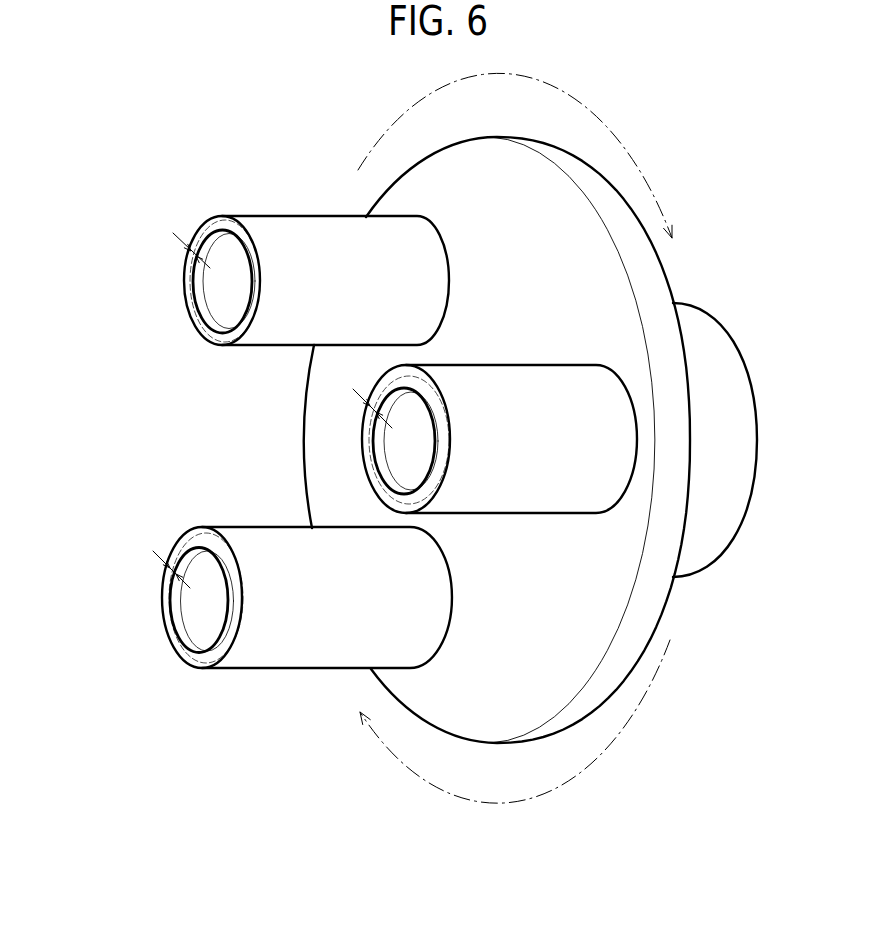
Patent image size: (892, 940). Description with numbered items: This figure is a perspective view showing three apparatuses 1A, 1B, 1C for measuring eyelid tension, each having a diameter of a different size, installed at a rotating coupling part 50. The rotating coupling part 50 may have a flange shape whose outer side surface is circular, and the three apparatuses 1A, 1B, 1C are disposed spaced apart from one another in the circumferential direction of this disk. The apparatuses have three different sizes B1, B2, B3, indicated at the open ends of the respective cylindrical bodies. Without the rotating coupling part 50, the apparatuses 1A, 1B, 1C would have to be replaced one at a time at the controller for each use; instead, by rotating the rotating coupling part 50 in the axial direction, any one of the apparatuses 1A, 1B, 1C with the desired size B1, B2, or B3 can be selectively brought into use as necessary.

The rotating coupling part 50 is at (670, 272).
The apparatus for measuring eyelid tension 1A is at (254, 211).
The apparatus for measuring eyelid tension 1B is at (238, 521).
The apparatus for measuring eyelid tension 1C is at (498, 358).
The size B1 is at (187, 248).
The size B2 is at (166, 566).
The size B3 is at (367, 406).